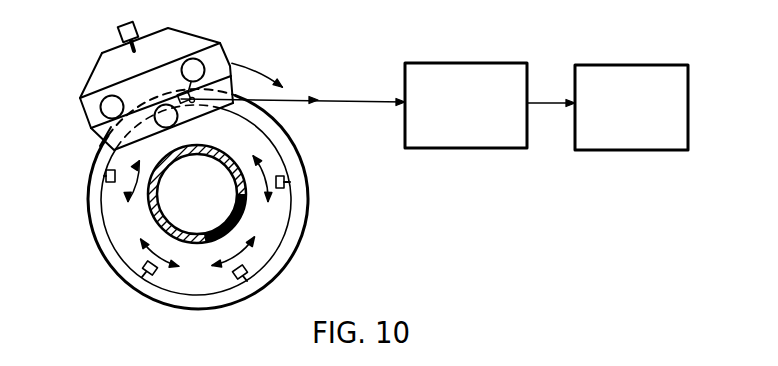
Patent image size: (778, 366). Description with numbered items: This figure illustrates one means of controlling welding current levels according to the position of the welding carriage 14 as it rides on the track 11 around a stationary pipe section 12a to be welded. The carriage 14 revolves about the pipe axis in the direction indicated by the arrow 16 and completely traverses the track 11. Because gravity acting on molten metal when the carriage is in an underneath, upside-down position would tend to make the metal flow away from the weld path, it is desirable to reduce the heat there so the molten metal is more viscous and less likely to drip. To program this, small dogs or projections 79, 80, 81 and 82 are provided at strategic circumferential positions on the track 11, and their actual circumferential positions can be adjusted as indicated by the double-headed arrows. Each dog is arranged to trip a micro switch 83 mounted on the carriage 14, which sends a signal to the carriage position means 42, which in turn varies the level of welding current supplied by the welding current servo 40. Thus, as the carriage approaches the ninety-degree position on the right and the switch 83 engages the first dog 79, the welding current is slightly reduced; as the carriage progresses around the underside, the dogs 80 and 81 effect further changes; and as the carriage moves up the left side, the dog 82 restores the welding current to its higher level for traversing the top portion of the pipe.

The track 11 is at (113, 243).
The pipe section 12a is at (243, 204).
The carriage 14 is at (98, 73).
The arrow 16 is at (263, 72).
The micro switch 83 is at (199, 104).
The dog 82 is at (106, 177).
The dog 79 is at (287, 175).
The dog 81 is at (145, 264).
The dog 80 is at (243, 266).
The carriage position means 42 is at (490, 150).
The welding current servo 40 is at (652, 152).